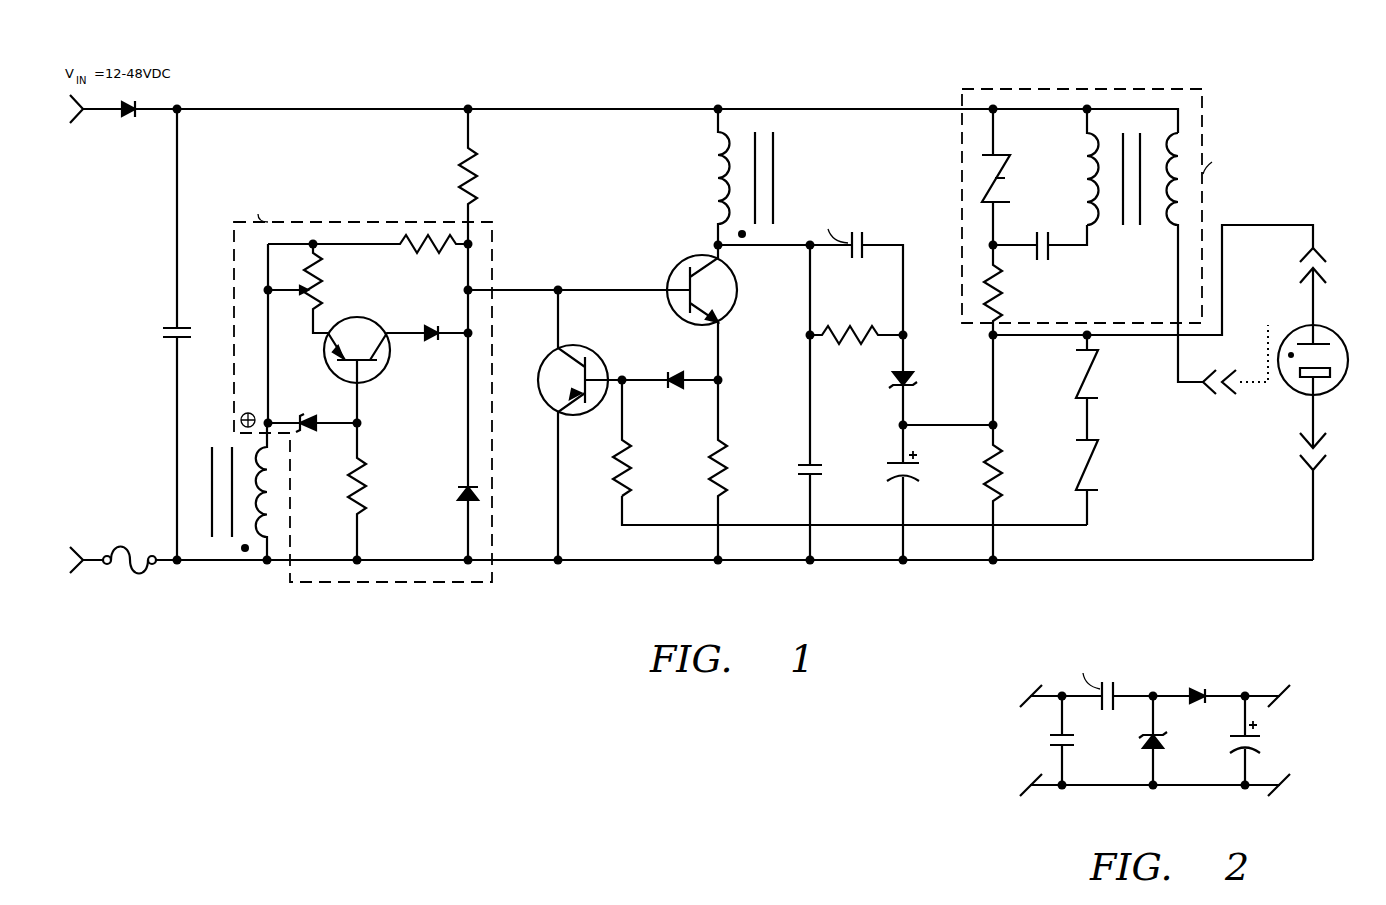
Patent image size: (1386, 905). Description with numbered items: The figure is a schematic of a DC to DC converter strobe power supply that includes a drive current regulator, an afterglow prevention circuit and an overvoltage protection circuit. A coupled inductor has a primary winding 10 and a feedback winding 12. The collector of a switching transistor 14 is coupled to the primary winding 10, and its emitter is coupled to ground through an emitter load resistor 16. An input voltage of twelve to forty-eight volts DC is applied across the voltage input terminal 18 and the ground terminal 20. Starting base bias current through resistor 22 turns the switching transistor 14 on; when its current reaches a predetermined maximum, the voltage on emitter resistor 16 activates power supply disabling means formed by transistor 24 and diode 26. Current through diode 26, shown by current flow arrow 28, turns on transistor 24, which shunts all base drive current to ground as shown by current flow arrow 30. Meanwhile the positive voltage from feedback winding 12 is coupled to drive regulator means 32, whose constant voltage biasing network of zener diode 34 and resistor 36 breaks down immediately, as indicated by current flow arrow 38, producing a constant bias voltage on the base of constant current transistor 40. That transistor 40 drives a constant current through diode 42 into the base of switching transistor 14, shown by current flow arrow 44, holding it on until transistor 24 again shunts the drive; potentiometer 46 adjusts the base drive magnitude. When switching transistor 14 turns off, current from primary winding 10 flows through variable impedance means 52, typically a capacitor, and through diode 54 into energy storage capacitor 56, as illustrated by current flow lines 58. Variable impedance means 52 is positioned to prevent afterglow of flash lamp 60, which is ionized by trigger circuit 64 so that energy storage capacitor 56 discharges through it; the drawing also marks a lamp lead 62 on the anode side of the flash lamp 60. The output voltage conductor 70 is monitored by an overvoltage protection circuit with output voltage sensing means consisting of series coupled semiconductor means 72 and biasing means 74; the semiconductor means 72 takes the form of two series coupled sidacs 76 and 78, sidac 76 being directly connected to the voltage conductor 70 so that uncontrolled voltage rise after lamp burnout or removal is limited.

In FIG. 1, the primary winding 10 is at (714, 178).
In FIG. 1, the feedback winding 12 is at (210, 470).
In FIG. 1, the switching transistor 14 is at (700, 256).
In FIG. 1, the emitter load resistor 16 is at (727, 452).
In FIG. 1, the voltage input terminal 18 is at (84, 115).
In FIG. 1, the ground terminal 20 is at (84, 547).
In FIG. 1, the resistor 22 is at (462, 168).
In FIG. 1, the transistor 24 is at (572, 346).
In FIG. 1, the diode 26 is at (678, 387).
In FIG. 1, the current flow arrow 28 is at (643, 367).
In FIG. 1, the current flow arrow 30 is at (550, 330).
In FIG. 1, the drive regulator means 32 is at (232, 263).
In FIG. 1, the zener diode 34 is at (308, 421).
In FIG. 1, the resistor 36 is at (362, 460).
In FIG. 1, the current flow arrow 38 is at (345, 468).
In FIG. 1, the constant current transistor 40 is at (360, 318).
In FIG. 1, the diode 42 is at (430, 328).
In FIG. 1, the current flow arrow 44 is at (645, 278).
In FIG. 1, the potentiometer 46 is at (322, 277).
In FIG. 1, the variable impedance means 52 is at (862, 244).
In FIG. 2, the variable impedance means 52 is at (1118, 689).
In FIG. 1, the diode 54 is at (892, 376).
In FIG. 1, the energy storage capacitor 56 is at (895, 461).
In FIG. 2, the energy storage capacitor 56 is at (1240, 731).
In FIG. 1, the current flow lines 58 is at (753, 267).
In FIG. 1, the flash lamp 60 is at (1330, 336).
In FIG. 1, the anode lead 62 is at (1310, 296).
In FIG. 1, the trigger circuit 64 is at (1203, 212).
In FIG. 1, the output voltage conductor 70 is at (1312, 226).
In FIG. 1, the semiconductor means 72 is at (1150, 400).
In FIG. 1, the biasing means 74 is at (632, 468).
In FIG. 1, the sidac 76 is at (1078, 390).
In FIG. 1, the sidac 78 is at (1078, 478).